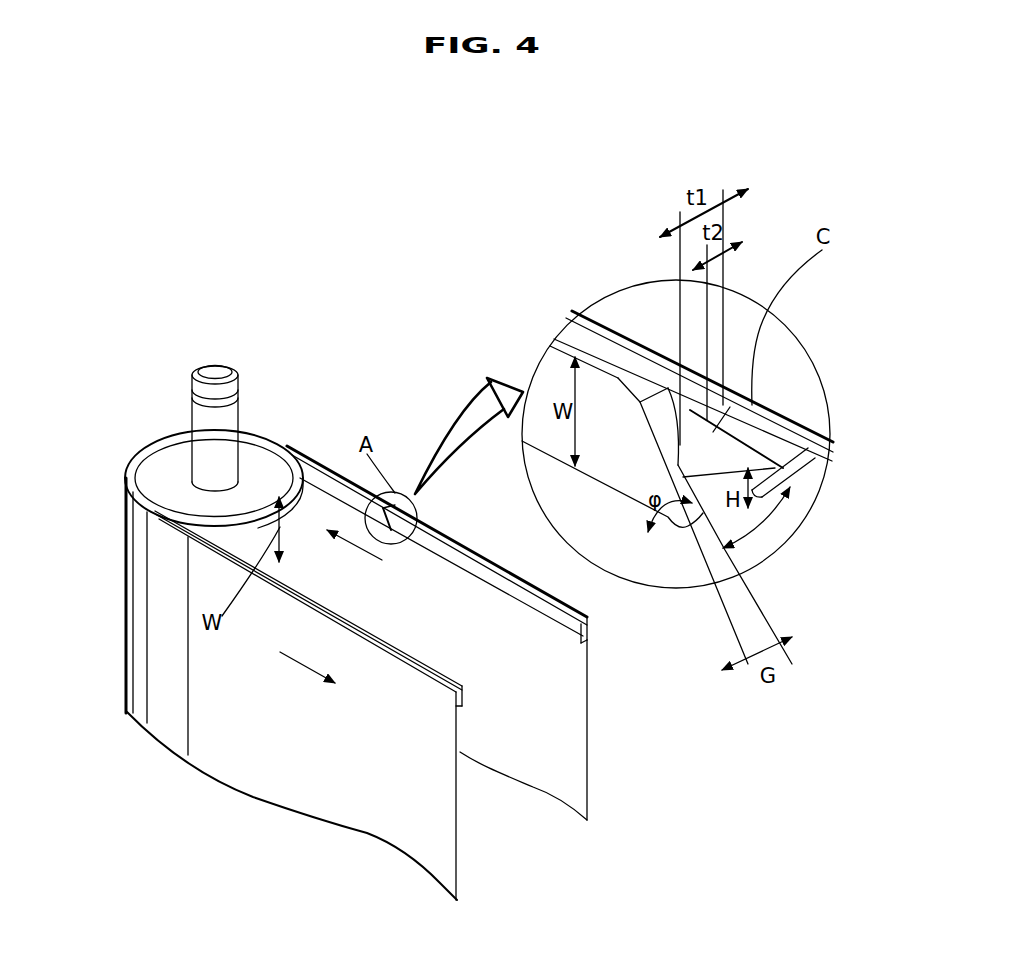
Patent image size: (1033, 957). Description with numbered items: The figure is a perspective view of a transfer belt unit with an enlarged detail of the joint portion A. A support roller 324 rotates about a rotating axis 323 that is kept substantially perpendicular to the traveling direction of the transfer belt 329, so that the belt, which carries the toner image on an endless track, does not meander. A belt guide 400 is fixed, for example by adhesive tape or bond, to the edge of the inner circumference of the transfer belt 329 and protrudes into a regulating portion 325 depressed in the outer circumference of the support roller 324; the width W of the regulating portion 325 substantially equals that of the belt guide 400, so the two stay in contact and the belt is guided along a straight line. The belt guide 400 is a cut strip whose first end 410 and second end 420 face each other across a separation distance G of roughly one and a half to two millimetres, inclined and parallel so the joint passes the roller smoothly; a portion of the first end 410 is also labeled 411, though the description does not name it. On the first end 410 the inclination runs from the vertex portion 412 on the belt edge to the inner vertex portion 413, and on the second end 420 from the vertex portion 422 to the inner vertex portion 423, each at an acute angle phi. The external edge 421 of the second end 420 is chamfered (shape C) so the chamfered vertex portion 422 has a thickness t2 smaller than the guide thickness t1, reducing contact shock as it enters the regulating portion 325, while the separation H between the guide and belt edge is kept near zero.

The rotating axis 323 is at (240, 412).
The support roller 324 is at (270, 457).
The regulating portion 325 is at (240, 533).
The transfer belt 329 is at (357, 655).
The belt guide 400 is at (557, 607).
The first end 410 is at (665, 434).
The upper portion of first tab member 411 is at (590, 363).
The vertex portion 412 is at (646, 381).
The inner vertex portion 413 is at (684, 523).
The second end 420 is at (738, 387).
The external edge 421 is at (800, 480).
The vertex portion 422 is at (730, 403).
The inner vertex portion 423 is at (732, 559).